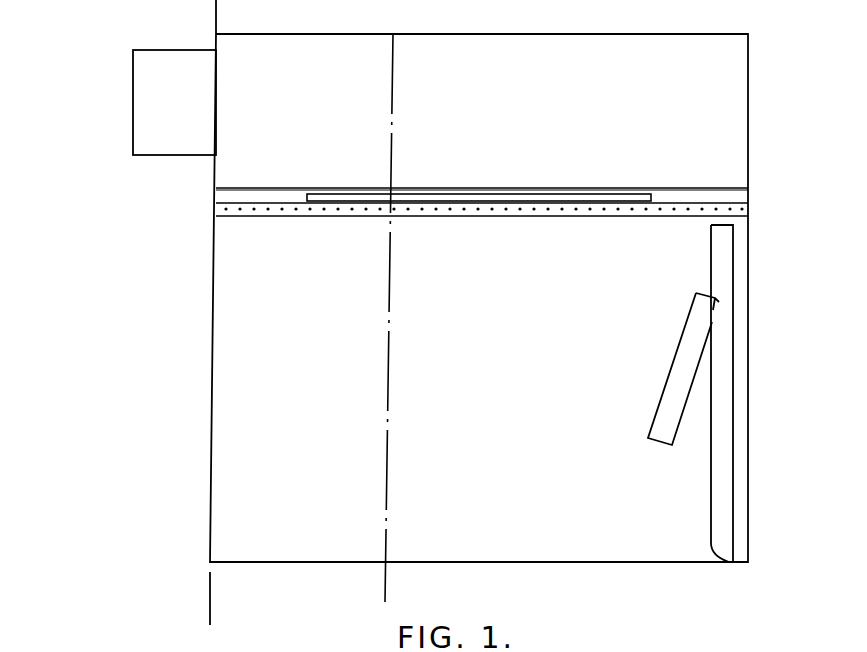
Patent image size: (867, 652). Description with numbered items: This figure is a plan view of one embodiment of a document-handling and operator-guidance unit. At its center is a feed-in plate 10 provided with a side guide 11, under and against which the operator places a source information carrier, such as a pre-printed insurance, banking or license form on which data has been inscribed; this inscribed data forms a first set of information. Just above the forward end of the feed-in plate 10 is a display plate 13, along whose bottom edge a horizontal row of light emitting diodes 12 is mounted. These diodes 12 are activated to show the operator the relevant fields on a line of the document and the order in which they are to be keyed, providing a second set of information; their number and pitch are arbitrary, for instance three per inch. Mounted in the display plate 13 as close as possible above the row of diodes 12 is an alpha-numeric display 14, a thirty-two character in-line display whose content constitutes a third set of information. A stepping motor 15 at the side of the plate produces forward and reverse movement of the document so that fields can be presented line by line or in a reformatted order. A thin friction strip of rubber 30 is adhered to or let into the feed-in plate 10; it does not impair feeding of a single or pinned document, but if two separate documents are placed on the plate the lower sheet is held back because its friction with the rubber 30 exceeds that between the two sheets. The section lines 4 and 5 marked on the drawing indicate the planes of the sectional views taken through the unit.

The feed-in plate 10 is at (479, 281).
The side guide 11 is at (720, 463).
The light emitting diodes 12 is at (740, 216).
The display plate 13 is at (740, 200).
The alpha-numeric display 14 is at (612, 190).
The stepping motor 15 is at (174, 102).
The friction strip of rubber 30 is at (686, 345).
The section line 4- 4 is at (198, 587).
The section line 5- 5 is at (375, 588).